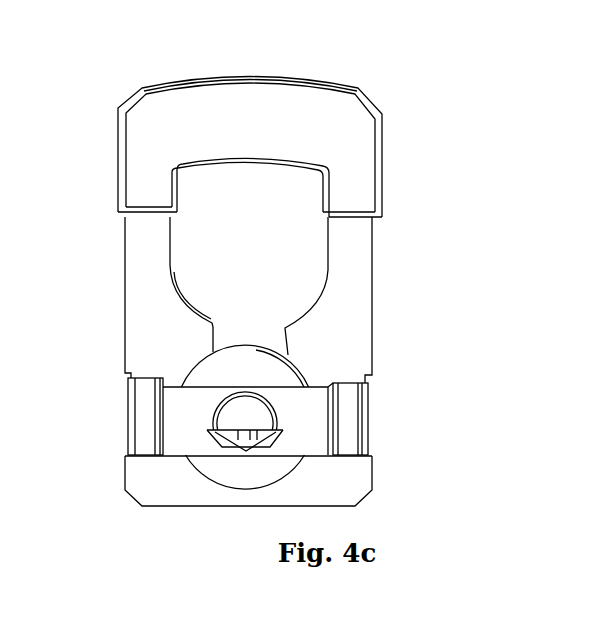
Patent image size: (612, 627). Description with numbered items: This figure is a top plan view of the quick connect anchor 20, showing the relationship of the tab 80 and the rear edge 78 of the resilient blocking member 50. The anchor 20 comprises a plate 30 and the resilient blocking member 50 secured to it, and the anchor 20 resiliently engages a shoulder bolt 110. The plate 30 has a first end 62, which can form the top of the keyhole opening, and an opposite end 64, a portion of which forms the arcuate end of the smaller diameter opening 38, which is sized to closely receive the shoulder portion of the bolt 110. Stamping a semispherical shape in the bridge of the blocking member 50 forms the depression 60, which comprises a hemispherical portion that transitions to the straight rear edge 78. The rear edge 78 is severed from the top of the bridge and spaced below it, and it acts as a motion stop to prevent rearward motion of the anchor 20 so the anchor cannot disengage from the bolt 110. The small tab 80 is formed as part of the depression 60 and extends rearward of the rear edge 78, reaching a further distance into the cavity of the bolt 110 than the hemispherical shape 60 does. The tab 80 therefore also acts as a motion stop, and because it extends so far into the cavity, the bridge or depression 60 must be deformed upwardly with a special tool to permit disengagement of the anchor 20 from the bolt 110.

The quick connect anchor 20 is at (22, 268).
The plate 30 is at (142, 310).
The smaller diameter opening 38 is at (273, 338).
The resilient blocking member 50 is at (180, 418).
The depression 60 is at (245, 417).
The first end 62 is at (357, 240).
The opposite end 64 is at (318, 117).
The rear edge 78 is at (227, 435).
The tab 80 is at (250, 435).
The shoulder bolt 110 is at (267, 378).